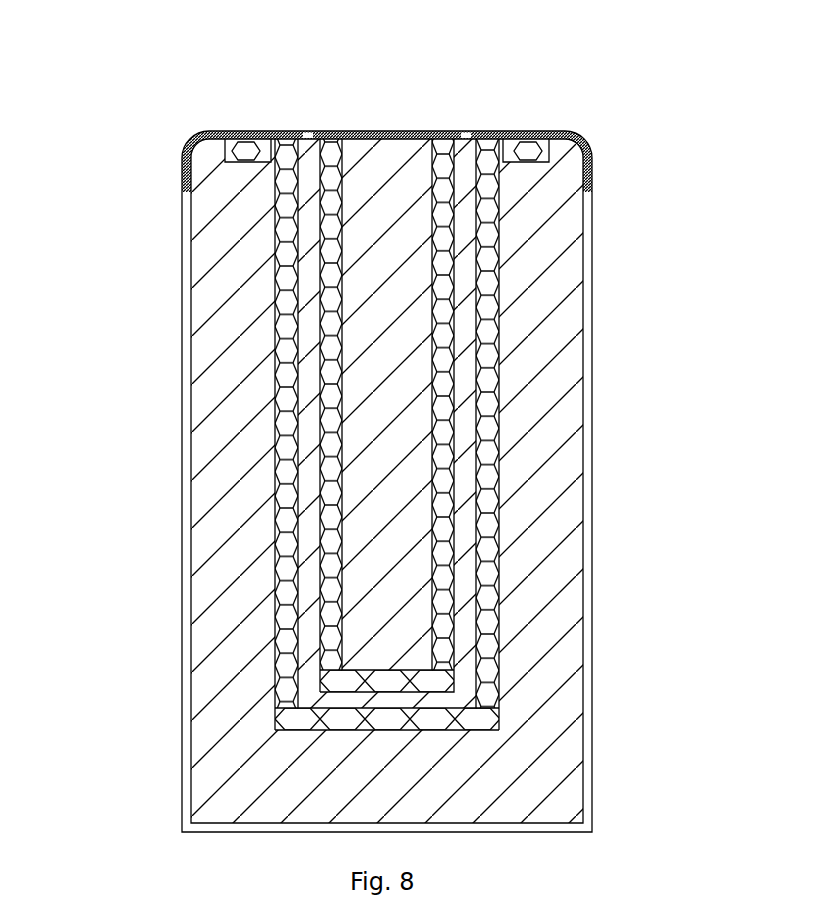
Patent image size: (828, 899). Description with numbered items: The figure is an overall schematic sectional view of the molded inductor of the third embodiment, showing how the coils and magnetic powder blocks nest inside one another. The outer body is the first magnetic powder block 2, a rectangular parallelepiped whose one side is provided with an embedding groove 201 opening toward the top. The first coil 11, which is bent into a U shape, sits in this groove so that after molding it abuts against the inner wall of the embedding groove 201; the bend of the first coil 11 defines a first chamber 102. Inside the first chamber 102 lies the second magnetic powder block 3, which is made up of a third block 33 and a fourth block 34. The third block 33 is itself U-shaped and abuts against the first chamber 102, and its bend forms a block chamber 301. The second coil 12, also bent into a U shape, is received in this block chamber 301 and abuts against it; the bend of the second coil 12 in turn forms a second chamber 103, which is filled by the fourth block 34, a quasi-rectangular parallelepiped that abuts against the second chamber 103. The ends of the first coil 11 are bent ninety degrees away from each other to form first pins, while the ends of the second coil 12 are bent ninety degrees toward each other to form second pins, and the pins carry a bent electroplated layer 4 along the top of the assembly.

The first magnetic powder block 2 is at (522, 522).
The second magnetic powder block 3 is at (250, 423).
The electroplated layer 4 is at (230, 129).
The first coil 11 is at (498, 318).
The second coil 12 is at (446, 187).
The third block 33 is at (303, 492).
The fourth block 34 is at (373, 433).
The first chamber 102 is at (502, 413).
The second chamber 103 is at (558, 151).
The embedding groove 201 is at (502, 690).
The block chamber 301 is at (330, 312).